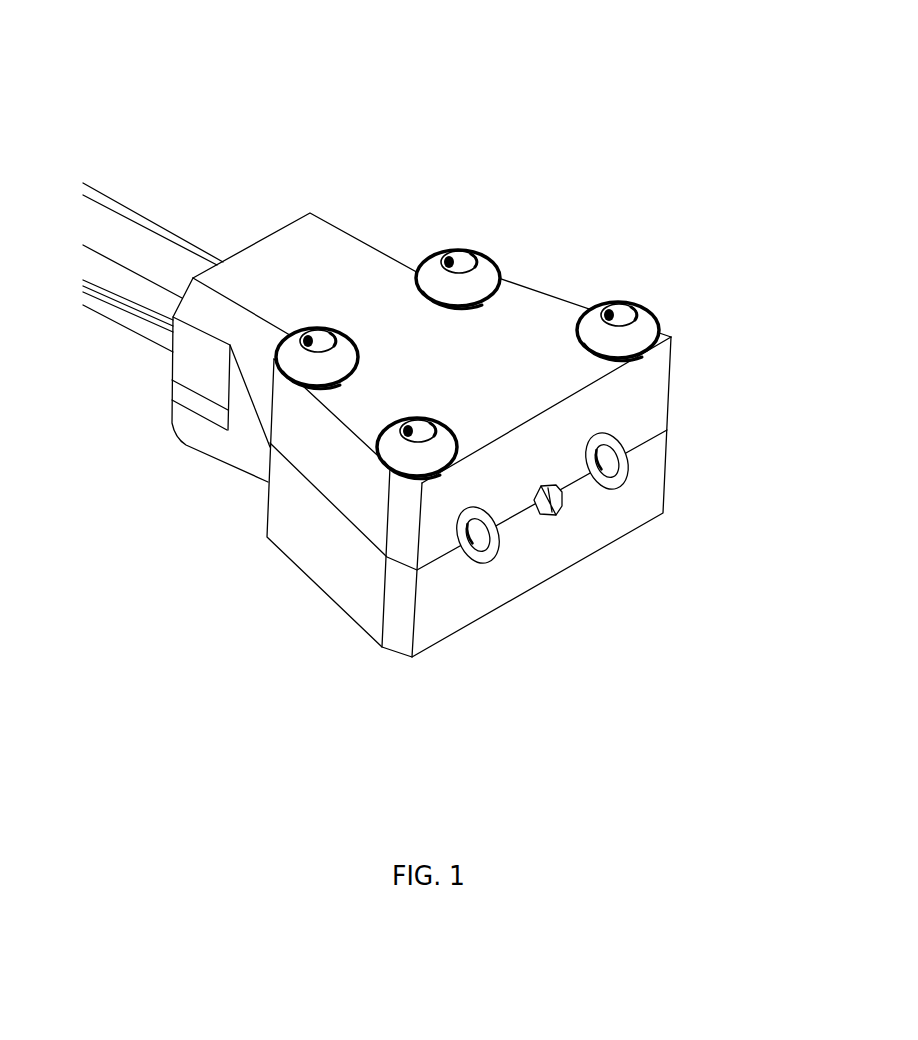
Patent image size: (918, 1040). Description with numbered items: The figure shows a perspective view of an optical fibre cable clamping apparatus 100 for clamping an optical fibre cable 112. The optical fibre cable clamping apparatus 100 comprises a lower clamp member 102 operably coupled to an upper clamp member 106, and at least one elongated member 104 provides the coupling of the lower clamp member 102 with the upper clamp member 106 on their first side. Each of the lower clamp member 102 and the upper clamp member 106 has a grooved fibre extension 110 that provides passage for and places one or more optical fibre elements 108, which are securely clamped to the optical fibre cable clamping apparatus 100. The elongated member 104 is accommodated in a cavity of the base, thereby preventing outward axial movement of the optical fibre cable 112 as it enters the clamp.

The optical fibre cable clamping apparatus 100 is at (461, 368).
The lower clamp member 102 is at (597, 520).
The elongated member 104 is at (645, 332).
The upper clamp member 106 is at (350, 267).
The optical fibre elements 108 is at (535, 507).
The grooved fibre extension 110 is at (547, 510).
The optical fibre cable 112 is at (151, 239).